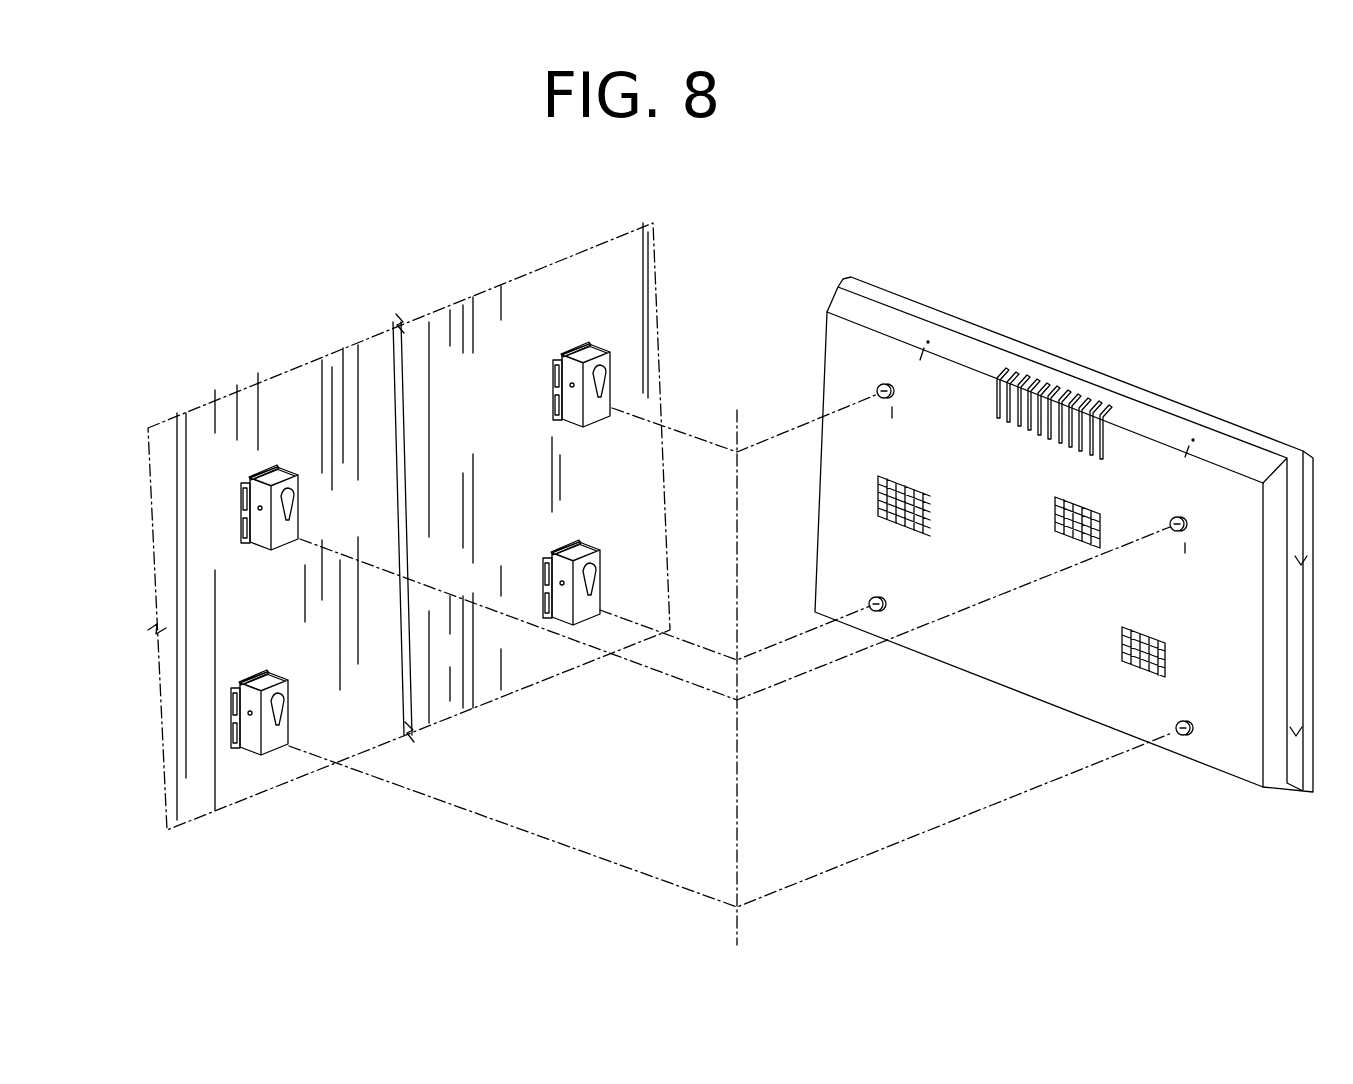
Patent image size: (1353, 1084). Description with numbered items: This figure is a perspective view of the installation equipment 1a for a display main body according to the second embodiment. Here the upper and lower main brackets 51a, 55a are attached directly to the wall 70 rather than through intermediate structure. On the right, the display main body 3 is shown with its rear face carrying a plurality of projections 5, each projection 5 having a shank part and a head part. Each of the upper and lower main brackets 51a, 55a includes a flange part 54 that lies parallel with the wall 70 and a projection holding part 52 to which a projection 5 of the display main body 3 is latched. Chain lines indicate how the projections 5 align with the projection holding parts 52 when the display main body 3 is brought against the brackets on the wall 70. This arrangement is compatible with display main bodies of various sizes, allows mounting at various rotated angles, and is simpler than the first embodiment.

The installation equipment 1a is at (154, 405).
The wall 70 is at (406, 336).
The projection holding part 52 is at (299, 488).
The flange part 54 is at (240, 503).
The upper main bracket 51a is at (257, 490).
The lower main bracket 55a is at (566, 622).
The display main body 3 is at (984, 362).
The projection 5 is at (884, 383).